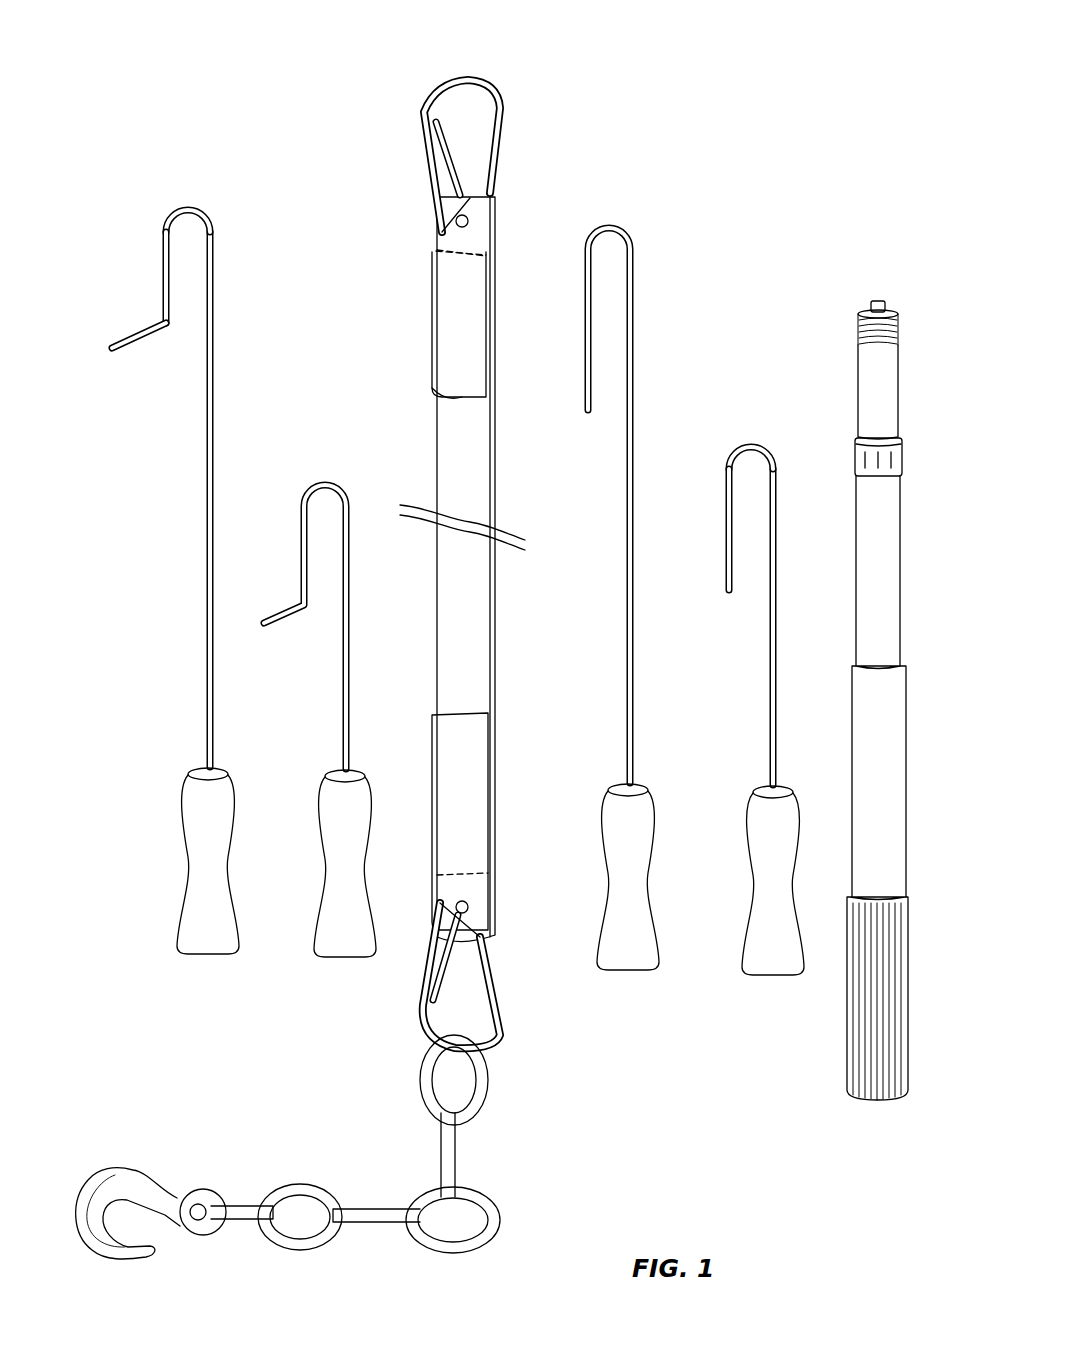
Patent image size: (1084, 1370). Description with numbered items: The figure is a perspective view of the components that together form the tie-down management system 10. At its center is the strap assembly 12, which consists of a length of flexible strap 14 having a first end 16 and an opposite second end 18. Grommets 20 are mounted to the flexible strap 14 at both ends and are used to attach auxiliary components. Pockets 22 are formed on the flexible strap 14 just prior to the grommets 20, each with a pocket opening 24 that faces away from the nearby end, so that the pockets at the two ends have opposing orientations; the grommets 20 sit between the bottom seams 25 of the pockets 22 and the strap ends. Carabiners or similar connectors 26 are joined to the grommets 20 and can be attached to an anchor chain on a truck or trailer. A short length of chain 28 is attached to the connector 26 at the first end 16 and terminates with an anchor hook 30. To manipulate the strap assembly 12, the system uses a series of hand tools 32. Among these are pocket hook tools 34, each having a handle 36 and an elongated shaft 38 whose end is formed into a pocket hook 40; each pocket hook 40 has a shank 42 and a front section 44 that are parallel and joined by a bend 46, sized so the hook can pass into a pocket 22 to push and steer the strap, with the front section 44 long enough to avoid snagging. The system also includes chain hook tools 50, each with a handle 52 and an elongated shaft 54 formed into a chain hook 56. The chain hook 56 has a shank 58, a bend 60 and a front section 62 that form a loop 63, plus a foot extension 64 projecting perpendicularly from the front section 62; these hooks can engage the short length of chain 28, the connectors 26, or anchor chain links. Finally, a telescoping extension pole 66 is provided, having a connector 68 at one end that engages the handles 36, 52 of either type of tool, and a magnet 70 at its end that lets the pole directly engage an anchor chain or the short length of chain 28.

The tie-down management system 10 is at (708, 215).
The strap assembly 12 is at (400, 160).
The flexible strap 14 is at (495, 490).
The first end 16 is at (485, 948).
The second end 18 is at (487, 187).
The grommets 20 is at (470, 222).
The pockets 22 is at (453, 333).
The pocket opening 24 is at (453, 398).
The bottom seams 25 is at (461, 252).
The connectors 26 is at (465, 83).
The short length of chain 28 is at (337, 1192).
The anchor hook 30 is at (120, 1170).
The hand tools 32 is at (146, 998).
The pocket hook tools 34 is at (763, 925).
The handles 36 is at (632, 887).
The elongated shafts 38 is at (640, 718).
The pocket hooks 40 is at (690, 565).
The shank 42 is at (773, 525).
The front section 44 is at (727, 543).
The bend 46 is at (770, 448).
The chain hook tools 50 is at (364, 1006).
The handles 52 is at (333, 810).
The elongated shafts 54 is at (207, 674).
The chain hooks 56 is at (227, 213).
The shank 58 is at (213, 282).
The bend 60 is at (188, 205).
The front section 62 is at (167, 298).
The loop 63 is at (320, 484).
The foot extension 64 is at (152, 340).
The extension pole 66 is at (857, 402).
The connector 68 is at (895, 332).
The magnet 70 is at (870, 302).